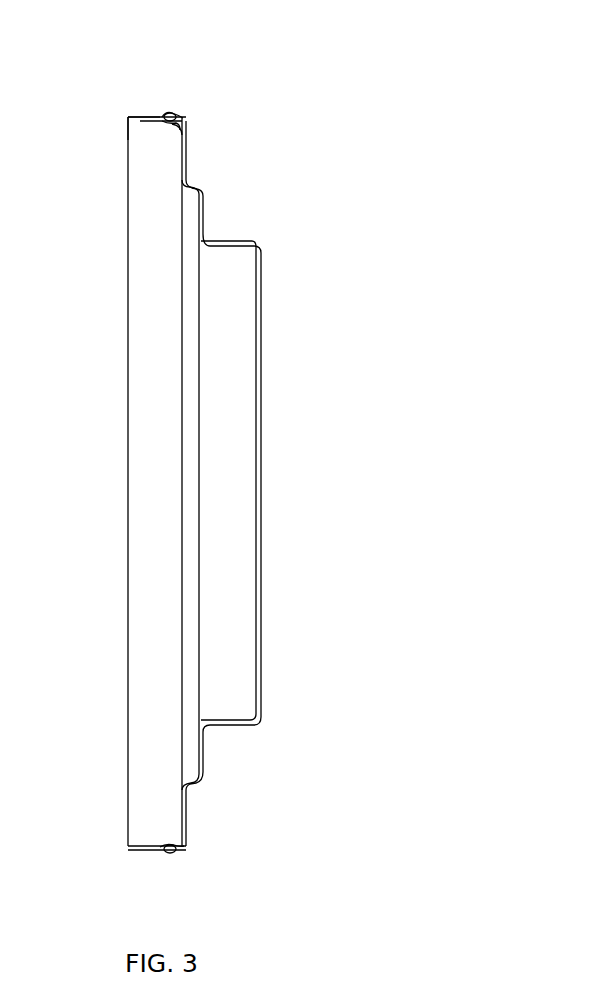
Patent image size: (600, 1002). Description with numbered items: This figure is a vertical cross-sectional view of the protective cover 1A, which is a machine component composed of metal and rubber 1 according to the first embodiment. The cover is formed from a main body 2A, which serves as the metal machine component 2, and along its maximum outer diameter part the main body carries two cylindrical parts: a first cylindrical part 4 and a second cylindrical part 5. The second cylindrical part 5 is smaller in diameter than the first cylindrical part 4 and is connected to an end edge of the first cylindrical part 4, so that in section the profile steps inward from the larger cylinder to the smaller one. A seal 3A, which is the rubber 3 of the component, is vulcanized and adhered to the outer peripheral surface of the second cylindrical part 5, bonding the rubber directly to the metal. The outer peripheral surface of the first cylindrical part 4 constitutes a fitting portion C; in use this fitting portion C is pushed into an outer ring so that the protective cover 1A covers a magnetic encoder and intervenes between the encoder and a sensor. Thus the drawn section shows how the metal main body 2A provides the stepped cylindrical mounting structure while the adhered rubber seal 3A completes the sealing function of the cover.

The protective cover 1A is at (285, 483).
The machine component composed of metal and rubber 1 is at (287, 428).
The main body 2A is at (278, 483).
The machine component 2 is at (262, 590).
The seal 3A is at (209, 439).
The rubber 3 is at (178, 117).
The first cylindrical part 4 is at (133, 121).
The second cylindrical part 5 is at (171, 132).
The fitting portion C is at (140, 117).